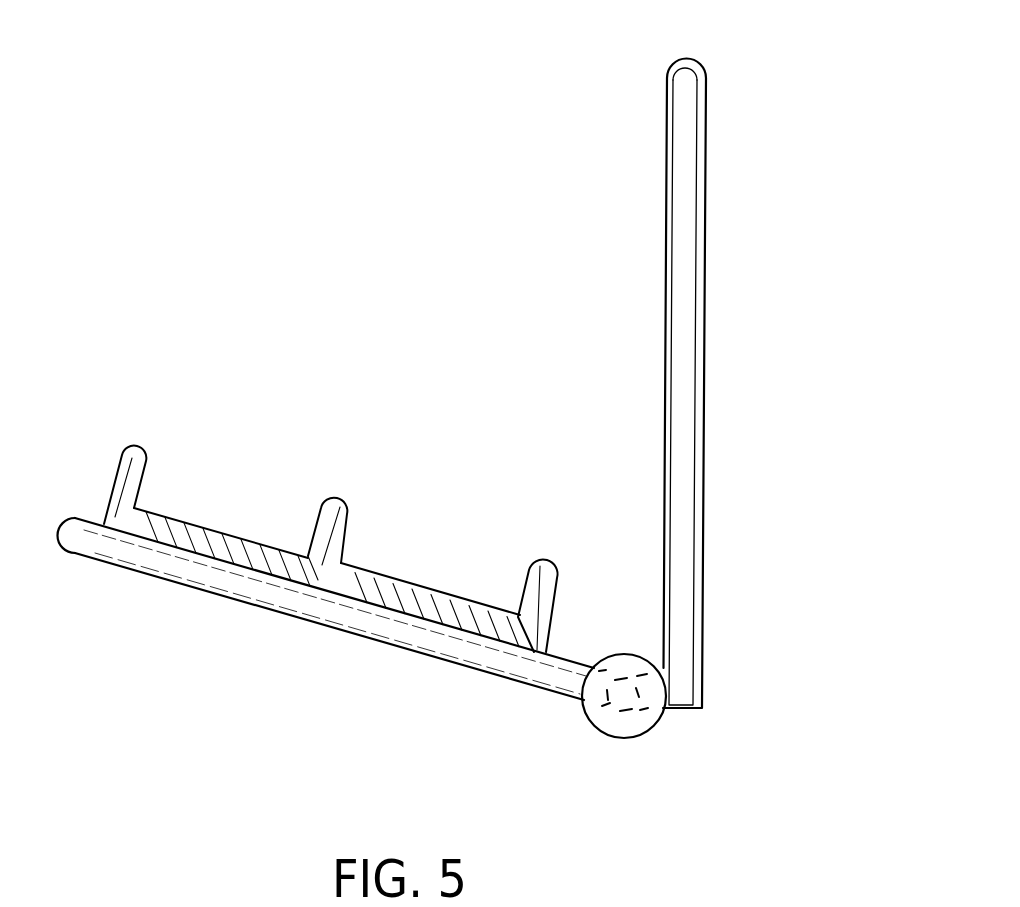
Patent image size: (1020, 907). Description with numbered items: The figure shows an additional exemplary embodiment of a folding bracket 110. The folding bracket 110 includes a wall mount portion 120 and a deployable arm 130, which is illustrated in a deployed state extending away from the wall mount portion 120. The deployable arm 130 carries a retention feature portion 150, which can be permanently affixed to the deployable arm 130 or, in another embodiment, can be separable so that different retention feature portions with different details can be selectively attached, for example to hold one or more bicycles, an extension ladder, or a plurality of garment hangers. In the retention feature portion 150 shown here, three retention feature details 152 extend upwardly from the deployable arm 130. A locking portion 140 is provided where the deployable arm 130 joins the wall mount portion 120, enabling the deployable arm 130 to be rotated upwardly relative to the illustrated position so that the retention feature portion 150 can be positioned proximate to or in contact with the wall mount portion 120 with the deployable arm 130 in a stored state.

The folding bracket 110 is at (702, 64).
The wall mount portion 120 is at (703, 352).
The deployable arm 130 is at (333, 616).
The locking portion 140 is at (638, 737).
The retention feature portion 150 is at (246, 538).
The retention feature details 152 is at (350, 518).